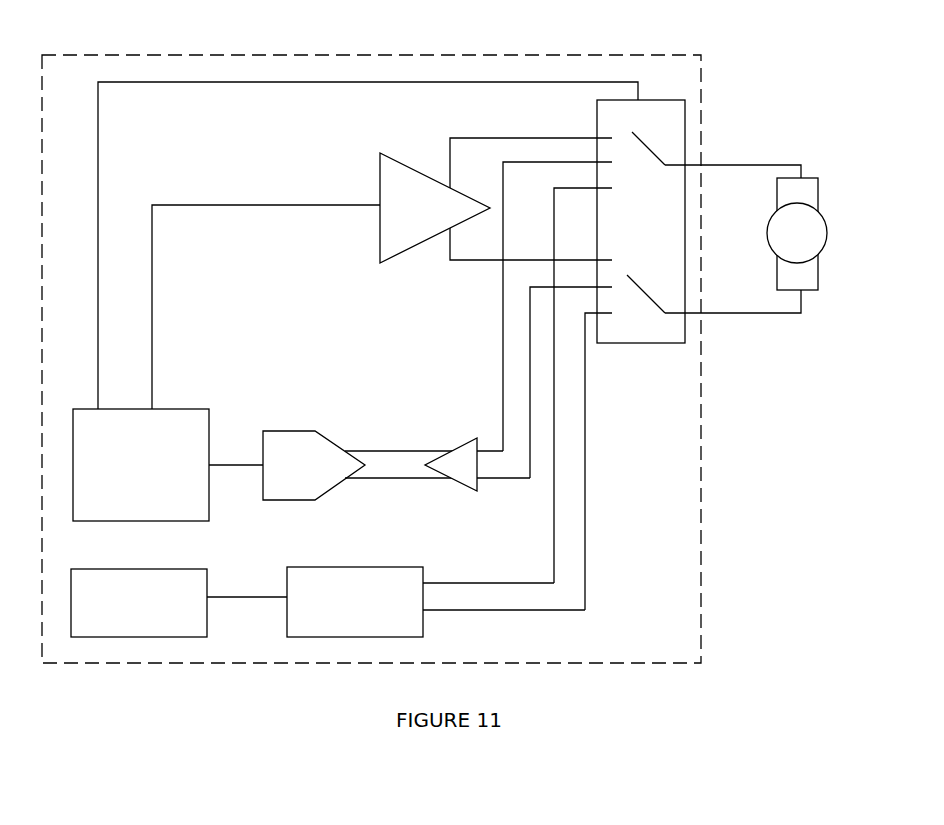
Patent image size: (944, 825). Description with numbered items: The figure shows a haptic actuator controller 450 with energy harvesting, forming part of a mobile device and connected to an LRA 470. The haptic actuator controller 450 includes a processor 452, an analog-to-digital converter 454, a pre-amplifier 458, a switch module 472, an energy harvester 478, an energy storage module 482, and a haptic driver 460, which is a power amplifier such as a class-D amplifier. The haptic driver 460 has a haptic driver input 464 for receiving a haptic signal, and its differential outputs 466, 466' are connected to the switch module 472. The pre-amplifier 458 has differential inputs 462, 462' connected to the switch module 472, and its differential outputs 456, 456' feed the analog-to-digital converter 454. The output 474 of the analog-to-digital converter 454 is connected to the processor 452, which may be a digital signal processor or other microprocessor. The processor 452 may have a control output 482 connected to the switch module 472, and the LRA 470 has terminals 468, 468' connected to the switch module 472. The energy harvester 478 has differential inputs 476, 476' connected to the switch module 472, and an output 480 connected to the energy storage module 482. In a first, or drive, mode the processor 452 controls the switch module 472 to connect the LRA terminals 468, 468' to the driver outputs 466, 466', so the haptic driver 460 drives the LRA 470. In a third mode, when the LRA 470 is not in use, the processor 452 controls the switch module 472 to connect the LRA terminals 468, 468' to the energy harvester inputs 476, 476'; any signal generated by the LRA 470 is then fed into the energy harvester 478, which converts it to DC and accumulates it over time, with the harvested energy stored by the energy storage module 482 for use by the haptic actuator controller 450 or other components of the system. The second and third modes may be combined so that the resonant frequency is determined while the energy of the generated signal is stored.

The haptic actuator controller 450 is at (233, 55).
The processor 452 is at (178, 409).
The analog-to-digital converter 454 is at (288, 431).
The differential output 456 is at (424, 416).
The differential output 456' is at (437, 509).
The pre-amplifier 458 is at (460, 487).
The haptic driver 460 is at (413, 167).
The differential input 462 is at (528, 306).
The differential input 462' is at (555, 421).
The haptic driver input 464 is at (317, 205).
The differential output 466 is at (531, 145).
The differential output 466' is at (509, 251).
The LRA terminal 468 is at (739, 150).
The LRA terminal 468' is at (745, 328).
The LRA 470 is at (827, 233).
The switch module 472 is at (637, 343).
The output 474 is at (233, 465).
The differential input 476 is at (564, 381).
The differential input 476' is at (618, 461).
The energy harvester 478 is at (342, 637).
The output 480 is at (248, 597).
The energy storage module 482 is at (317, 82).